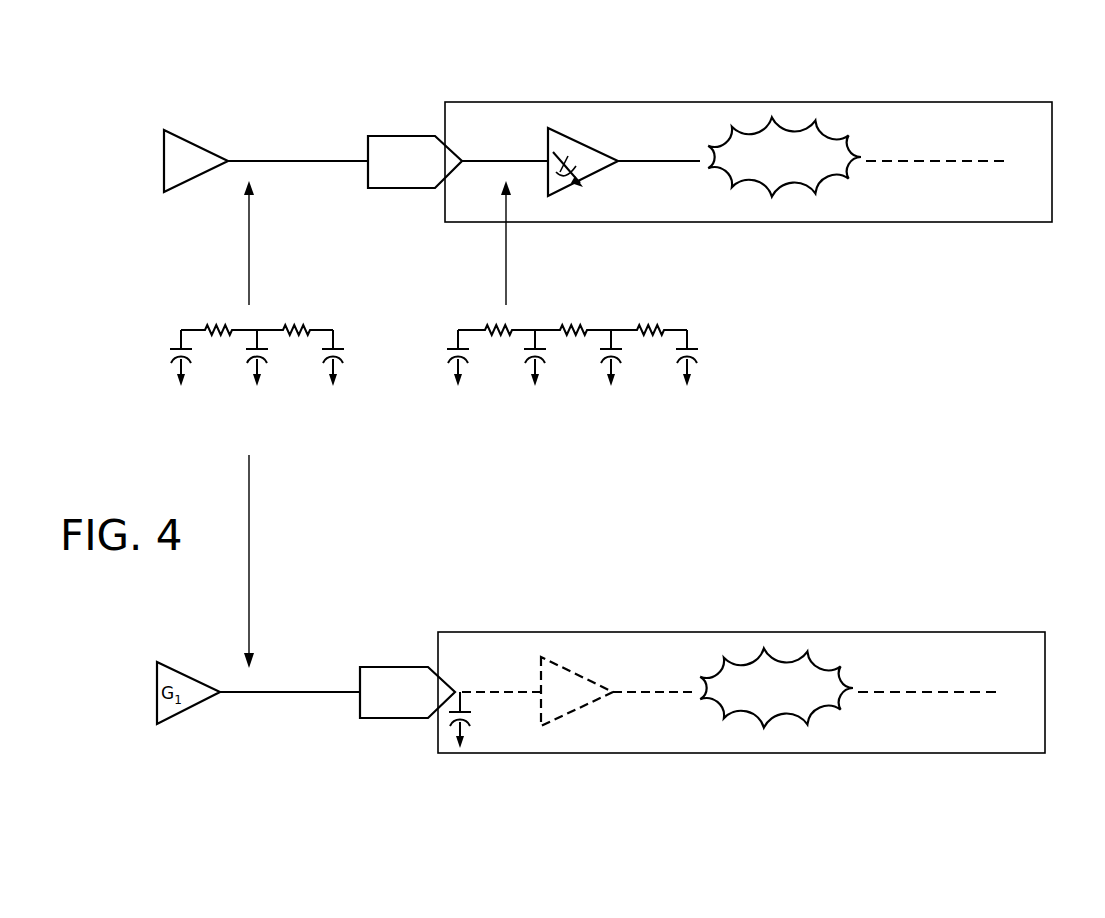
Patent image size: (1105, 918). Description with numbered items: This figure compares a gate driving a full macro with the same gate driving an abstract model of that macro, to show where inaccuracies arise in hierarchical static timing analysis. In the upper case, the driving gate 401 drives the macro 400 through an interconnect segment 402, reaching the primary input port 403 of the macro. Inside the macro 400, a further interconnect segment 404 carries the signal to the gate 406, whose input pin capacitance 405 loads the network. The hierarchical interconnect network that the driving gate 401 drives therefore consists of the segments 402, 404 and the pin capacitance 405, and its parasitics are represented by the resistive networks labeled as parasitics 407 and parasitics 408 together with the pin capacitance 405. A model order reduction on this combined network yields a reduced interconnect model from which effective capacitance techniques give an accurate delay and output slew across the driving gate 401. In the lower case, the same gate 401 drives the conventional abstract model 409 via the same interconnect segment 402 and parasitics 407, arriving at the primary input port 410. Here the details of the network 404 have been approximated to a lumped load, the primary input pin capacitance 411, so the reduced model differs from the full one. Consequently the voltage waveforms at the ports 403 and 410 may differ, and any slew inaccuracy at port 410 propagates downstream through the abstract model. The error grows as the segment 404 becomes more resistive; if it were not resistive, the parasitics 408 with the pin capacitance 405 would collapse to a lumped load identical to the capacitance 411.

The macro 400 is at (960, 70).
The gate G1 401 is at (198, 143).
The interconnect segment 402 is at (281, 161).
The primary input port 403 is at (396, 136).
The interconnect segment 404 is at (500, 160).
The input pin capacitance 405 is at (560, 140).
The gate 406 is at (600, 150).
The parasitics 407 is at (349, 320).
The parasitics 408 is at (694, 306).
The abstract model 409 is at (955, 615).
The primary input port 410 is at (383, 667).
The primary input pin capacitance 411 is at (497, 690).